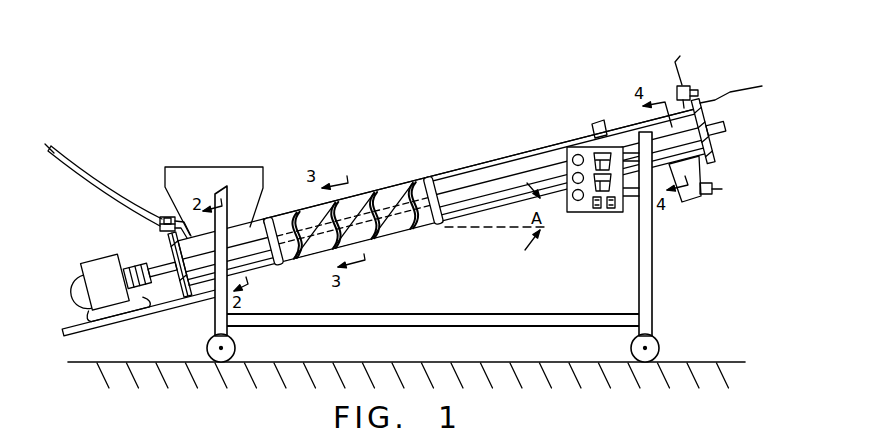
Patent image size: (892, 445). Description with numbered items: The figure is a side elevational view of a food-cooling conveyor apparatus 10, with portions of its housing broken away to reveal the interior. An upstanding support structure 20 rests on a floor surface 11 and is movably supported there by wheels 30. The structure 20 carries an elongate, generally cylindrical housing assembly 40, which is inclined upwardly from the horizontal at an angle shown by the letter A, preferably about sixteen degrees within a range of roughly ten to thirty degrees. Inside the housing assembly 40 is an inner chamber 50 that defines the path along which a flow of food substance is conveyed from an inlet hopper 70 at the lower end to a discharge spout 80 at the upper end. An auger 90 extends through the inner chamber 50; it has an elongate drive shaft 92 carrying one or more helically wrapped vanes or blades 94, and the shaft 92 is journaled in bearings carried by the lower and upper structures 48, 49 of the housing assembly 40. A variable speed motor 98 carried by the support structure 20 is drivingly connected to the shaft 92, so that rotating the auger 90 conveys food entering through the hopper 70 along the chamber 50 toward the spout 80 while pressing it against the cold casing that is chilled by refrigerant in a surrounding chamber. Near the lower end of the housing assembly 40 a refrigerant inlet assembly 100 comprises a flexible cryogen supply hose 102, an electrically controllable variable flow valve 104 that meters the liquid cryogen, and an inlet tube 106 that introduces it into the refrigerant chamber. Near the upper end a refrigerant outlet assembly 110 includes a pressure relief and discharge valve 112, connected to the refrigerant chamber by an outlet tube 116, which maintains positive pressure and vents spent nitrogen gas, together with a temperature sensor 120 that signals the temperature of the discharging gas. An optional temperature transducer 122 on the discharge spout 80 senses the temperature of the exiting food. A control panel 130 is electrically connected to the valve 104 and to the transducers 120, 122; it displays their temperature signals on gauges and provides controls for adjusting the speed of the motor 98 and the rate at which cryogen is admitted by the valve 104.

The apparatus 10 is at (419, 181).
The floor surface 11 is at (738, 361).
The support structure 20 is at (655, 270).
The wheels 30 is at (234, 347).
The housing assembly 40 is at (517, 150).
The lower structure 48 is at (178, 292).
The upper structure 49 is at (710, 115).
The inner chamber 50 is at (398, 190).
The inlet hopper 70 is at (193, 166).
The discharge spout 80 is at (690, 202).
The auger 90 is at (353, 206).
The drive shaft 92 is at (355, 220).
The helically wrapped vanes or blades 94 is at (398, 235).
The variable speed motor 98 is at (96, 253).
The refrigerant inlet assembly 100 is at (160, 196).
The flexible cryogen supply hose 102 is at (62, 150).
The variable flow valve 104 is at (159, 230).
The inlet tube 106 is at (165, 215).
The refrigerant outlet assembly 110 is at (696, 70).
The pressure relief and discharge valve 112 is at (690, 61).
The outlet tube 116 is at (748, 89).
The temperature sensor 120 is at (692, 88).
The temperature transducer 122 is at (704, 185).
The control panel 130 is at (571, 215).